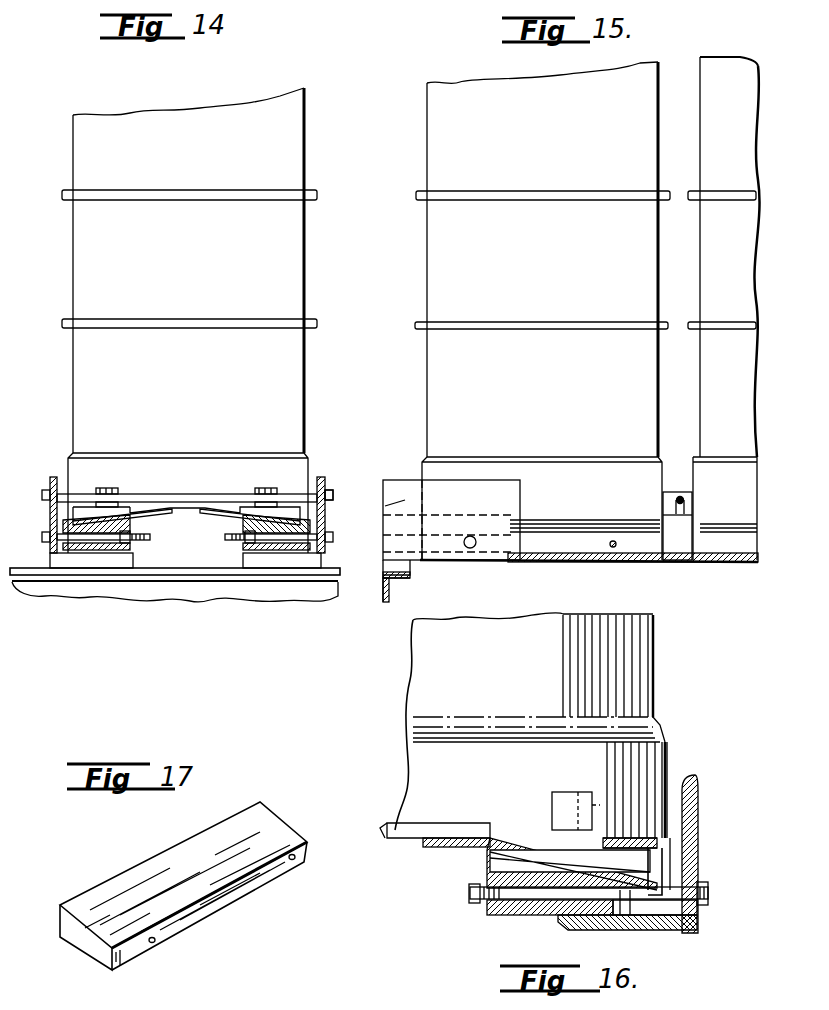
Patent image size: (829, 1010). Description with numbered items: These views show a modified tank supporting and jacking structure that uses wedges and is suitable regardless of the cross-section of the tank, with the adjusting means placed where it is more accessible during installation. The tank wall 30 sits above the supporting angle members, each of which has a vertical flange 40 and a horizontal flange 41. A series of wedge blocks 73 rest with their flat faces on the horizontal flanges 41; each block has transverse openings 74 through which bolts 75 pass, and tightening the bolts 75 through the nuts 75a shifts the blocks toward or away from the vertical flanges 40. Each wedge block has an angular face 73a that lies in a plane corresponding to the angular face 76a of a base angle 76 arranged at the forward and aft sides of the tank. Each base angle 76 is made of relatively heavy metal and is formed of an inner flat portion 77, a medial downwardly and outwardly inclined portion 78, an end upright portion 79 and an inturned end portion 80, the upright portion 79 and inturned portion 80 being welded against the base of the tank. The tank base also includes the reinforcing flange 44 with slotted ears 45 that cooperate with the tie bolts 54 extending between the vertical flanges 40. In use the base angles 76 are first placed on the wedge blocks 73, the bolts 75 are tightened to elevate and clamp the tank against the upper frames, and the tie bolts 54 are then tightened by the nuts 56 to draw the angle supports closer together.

In FIG. 14, the tank wall 30 is at (296, 258).
In FIG. 15, the tank wall 30 is at (720, 229).
In FIG. 14, the vertical flange 40 is at (50, 515).
In FIG. 15, the vertical flange 40 is at (451, 541).
In FIG. 16, the vertical flange 40 is at (699, 849).
In FIG. 14, the horizontal flange 41 is at (230, 552).
In FIG. 16, the horizontal flange 41 is at (600, 932).
In FIG. 16, the reinforcing flange 44 is at (420, 774).
In FIG. 16, the ears 45 is at (581, 791).
In FIG. 14, the bolts 54 is at (203, 498).
In FIG. 15, the bolts 54 is at (680, 497).
In FIG. 14, the nuts 56 is at (334, 492).
In FIG. 17, the wedge blocks 73 is at (100, 884).
In FIG. 17, the angular face 73a is at (258, 860).
In FIG. 17, the transverse openings 74 is at (157, 940).
In FIG. 14, the bolts 75 is at (100, 553).
In FIG. 16, the bolts 75 is at (667, 920).
In FIG. 16, the nuts 75a is at (468, 903).
In FIG. 14, the base angles 76 is at (186, 521).
In FIG. 16, the base angles 76 is at (460, 838).
In FIG. 16, the angular faces 76a is at (628, 902).
In FIG. 16, the inner flat portion 77 is at (418, 848).
In FIG. 15, the medial downwardly and outwardly inclined portion 78 is at (633, 526).
In FIG. 16, the medial downwardly and outwardly inclined portion 78 is at (656, 842).
In FIG. 16, the end upright portion 79 is at (665, 866).
In FIG. 16, the inturned end portion 80 is at (650, 830).